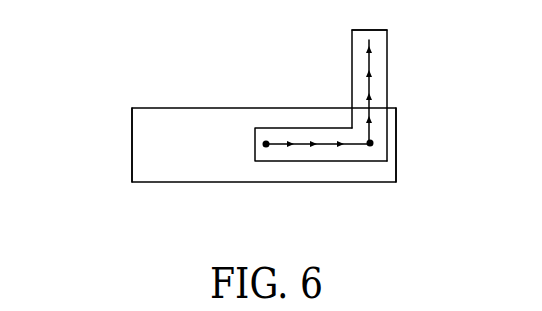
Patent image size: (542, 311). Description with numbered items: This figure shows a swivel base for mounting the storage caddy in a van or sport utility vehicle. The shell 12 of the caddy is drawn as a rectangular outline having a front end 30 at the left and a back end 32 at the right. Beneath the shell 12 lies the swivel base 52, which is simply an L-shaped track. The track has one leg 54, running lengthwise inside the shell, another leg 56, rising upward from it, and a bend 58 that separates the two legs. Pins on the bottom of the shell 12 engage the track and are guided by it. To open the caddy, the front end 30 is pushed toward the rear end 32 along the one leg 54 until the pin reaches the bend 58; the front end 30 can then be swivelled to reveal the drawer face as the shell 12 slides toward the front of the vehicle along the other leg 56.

The shell 12 is at (168, 132).
The front end 30 is at (132, 153).
The back end 32 is at (396, 138).
The swivel base 52 is at (357, 64).
The one leg 54 is at (292, 127).
The other leg 56 is at (386, 63).
The bend 58 is at (387, 161).